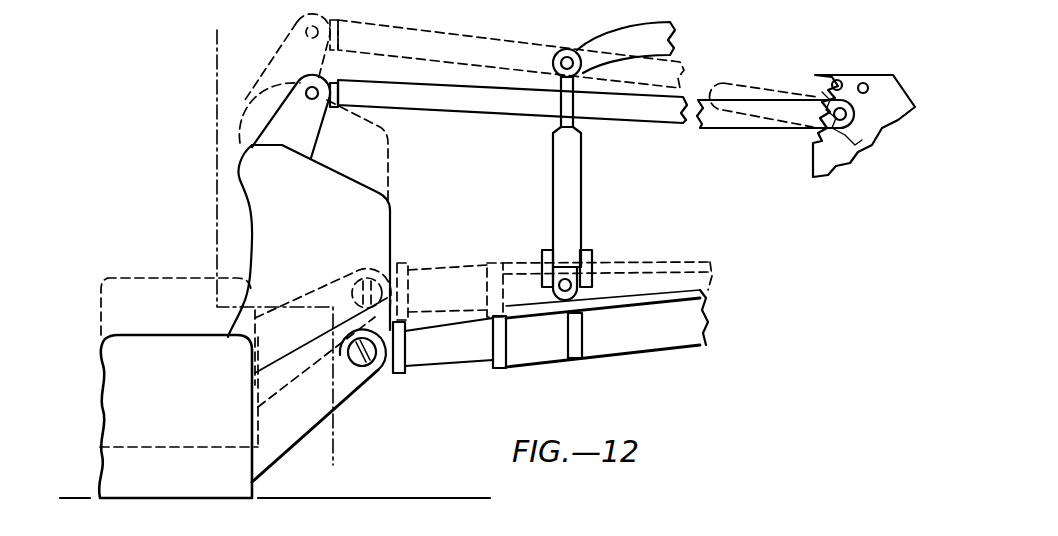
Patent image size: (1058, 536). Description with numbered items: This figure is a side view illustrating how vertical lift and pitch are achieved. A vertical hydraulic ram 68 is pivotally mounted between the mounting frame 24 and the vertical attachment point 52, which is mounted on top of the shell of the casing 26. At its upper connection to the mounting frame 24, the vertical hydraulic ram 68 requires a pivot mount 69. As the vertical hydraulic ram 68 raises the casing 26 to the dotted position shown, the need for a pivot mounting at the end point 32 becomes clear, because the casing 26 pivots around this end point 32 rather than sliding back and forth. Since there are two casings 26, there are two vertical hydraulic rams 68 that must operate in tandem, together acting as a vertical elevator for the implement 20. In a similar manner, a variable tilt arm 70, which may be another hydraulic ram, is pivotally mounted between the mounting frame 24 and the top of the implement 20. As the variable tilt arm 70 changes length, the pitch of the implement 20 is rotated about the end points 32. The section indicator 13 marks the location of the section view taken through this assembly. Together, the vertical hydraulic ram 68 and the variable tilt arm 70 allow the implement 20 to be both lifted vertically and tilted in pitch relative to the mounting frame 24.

The section line 13- 13 is at (362, 453).
The implement 20 is at (117, 403).
The mounting frame 24 is at (683, 37).
The casing 26 is at (687, 290).
The end point 32 is at (385, 375).
The vertical attachment point 52 is at (601, 274).
The vertical hydraulic ram 68 is at (572, 178).
The pivot mount 69 is at (577, 50).
The variable tilt arm 70 is at (402, 100).